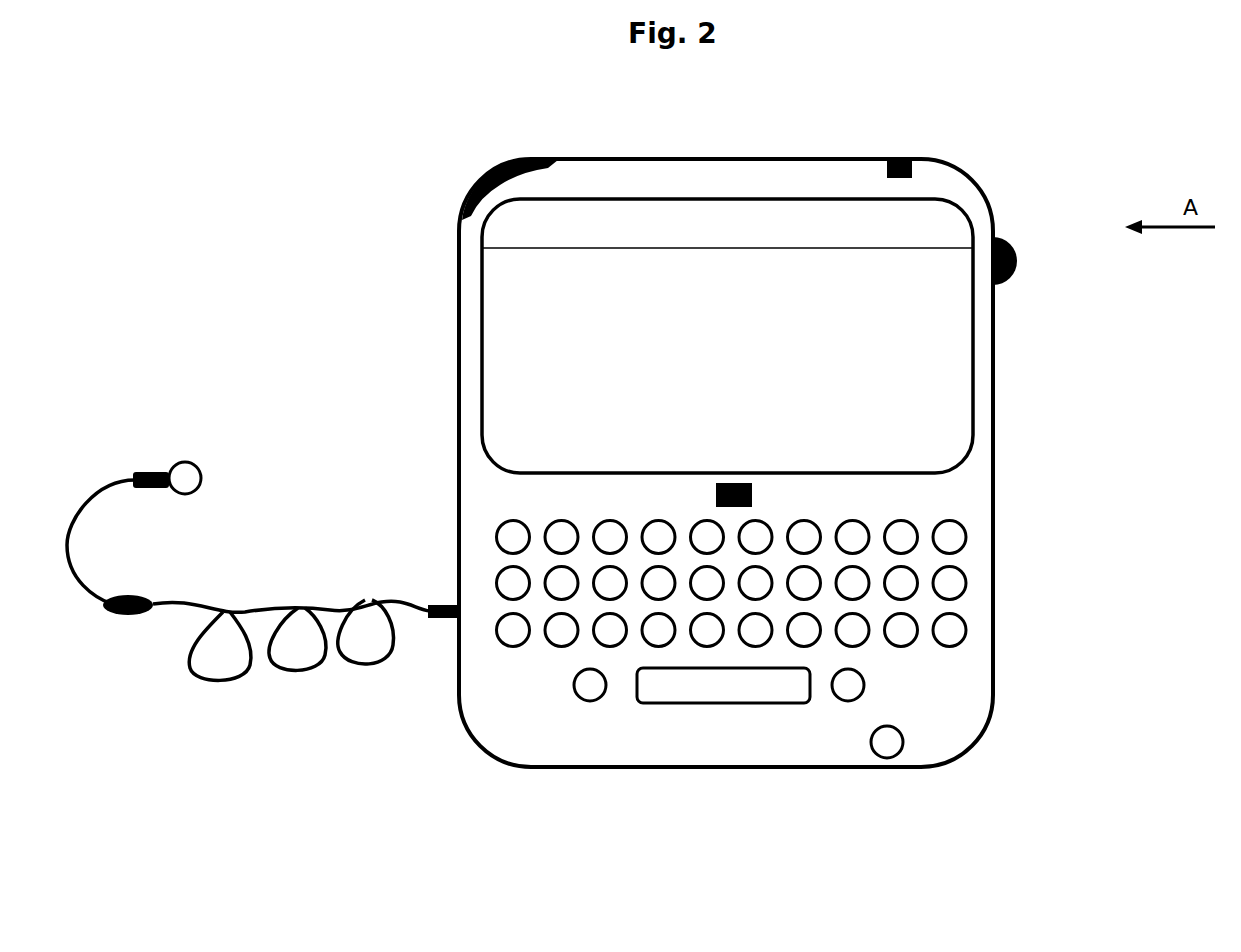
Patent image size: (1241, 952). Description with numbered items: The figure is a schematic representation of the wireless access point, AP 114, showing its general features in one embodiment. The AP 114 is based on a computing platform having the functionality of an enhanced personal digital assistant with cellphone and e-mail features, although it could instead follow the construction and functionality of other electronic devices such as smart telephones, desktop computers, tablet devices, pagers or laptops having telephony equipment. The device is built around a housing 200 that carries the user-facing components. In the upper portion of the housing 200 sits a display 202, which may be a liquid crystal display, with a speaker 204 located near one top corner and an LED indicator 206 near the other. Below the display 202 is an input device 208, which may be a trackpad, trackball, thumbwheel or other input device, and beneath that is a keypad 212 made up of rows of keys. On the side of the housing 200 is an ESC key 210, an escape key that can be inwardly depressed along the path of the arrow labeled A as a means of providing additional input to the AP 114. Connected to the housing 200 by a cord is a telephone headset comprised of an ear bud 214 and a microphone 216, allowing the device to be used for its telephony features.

The access point 114 is at (648, 813).
The housing 200 is at (952, 688).
The display 202 is at (562, 335).
The speaker 204 is at (470, 188).
The LED indicator 206 is at (940, 165).
The input device 208 is at (762, 495).
The ESC key 210 is at (1033, 257).
The keypad 212 is at (955, 505).
The ear bud 214 is at (212, 472).
The microphone 216 is at (155, 595).